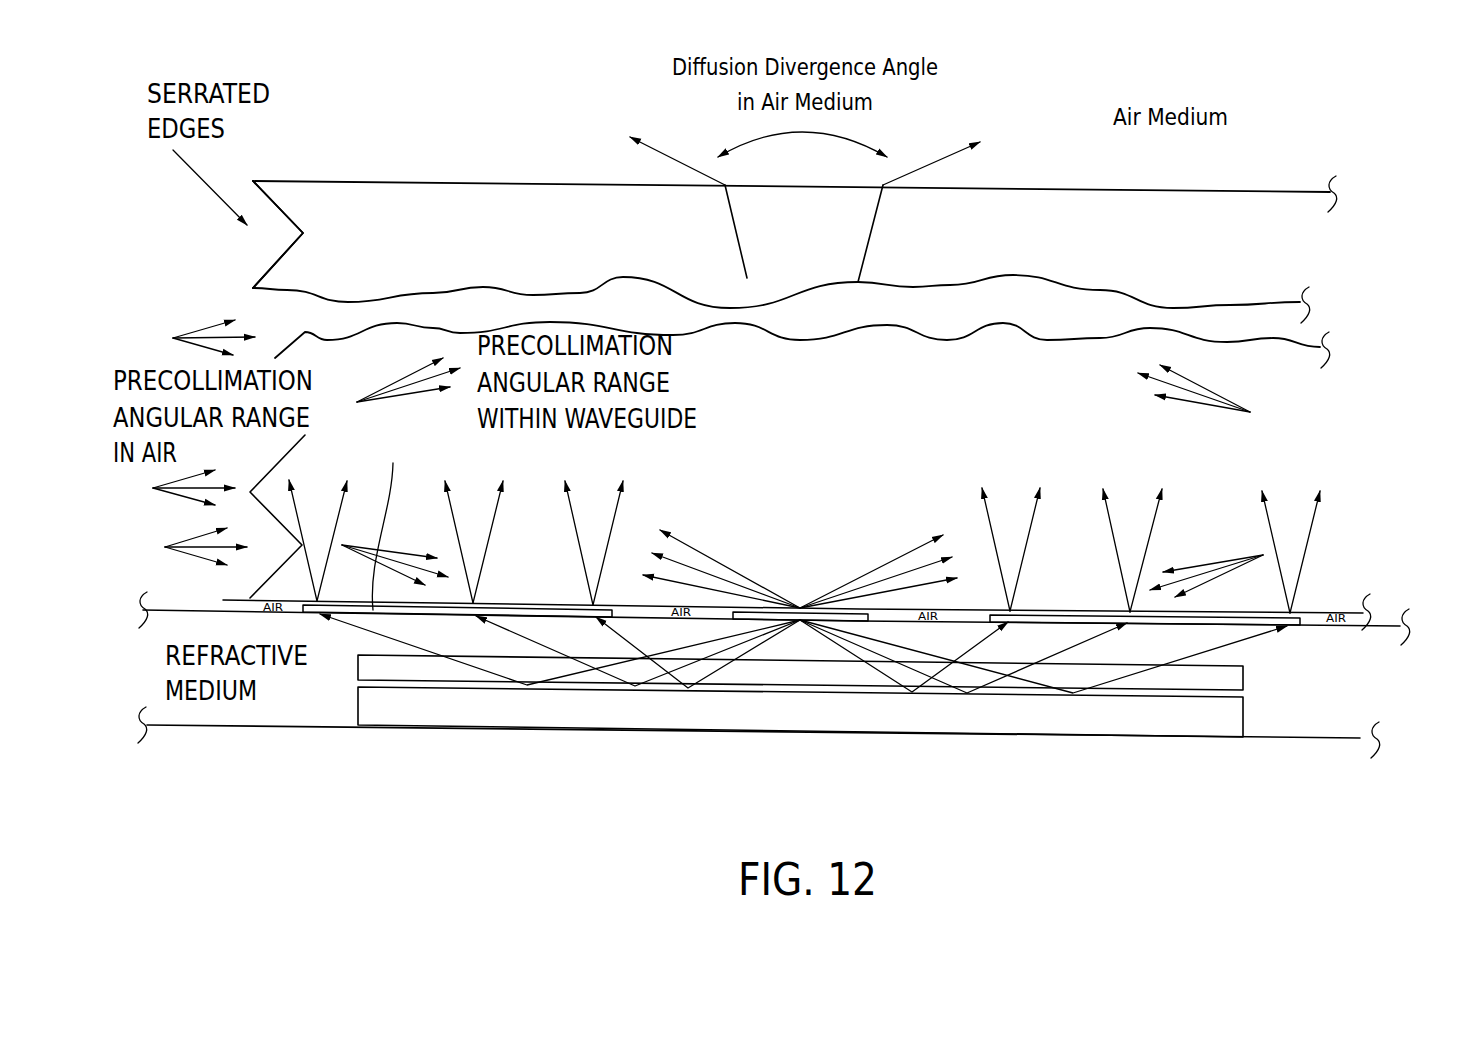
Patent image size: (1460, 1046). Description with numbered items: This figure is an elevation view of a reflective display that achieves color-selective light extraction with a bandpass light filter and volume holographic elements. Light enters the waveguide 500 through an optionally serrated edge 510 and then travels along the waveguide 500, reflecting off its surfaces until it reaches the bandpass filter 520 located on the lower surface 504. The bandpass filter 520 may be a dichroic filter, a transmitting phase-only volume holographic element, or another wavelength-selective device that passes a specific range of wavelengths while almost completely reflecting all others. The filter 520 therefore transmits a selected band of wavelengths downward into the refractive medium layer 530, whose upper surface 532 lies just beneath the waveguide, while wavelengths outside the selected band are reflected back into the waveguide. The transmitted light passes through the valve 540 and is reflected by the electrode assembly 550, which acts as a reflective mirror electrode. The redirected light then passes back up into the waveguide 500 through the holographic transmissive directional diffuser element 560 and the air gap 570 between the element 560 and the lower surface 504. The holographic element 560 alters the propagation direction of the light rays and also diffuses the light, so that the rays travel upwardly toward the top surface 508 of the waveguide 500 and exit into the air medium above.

The waveguide 500 is at (1298, 242).
The lower surface 504 is at (1340, 613).
The top surface 508 is at (1233, 192).
The serrated edge 510 is at (267, 270).
The bandpass filter 520 is at (802, 607).
The refractive medium layer 530 is at (155, 710).
The upper surface 532 is at (183, 610).
The valve 540 is at (1198, 683).
The electrode assembly 550 is at (1082, 723).
The holographic transmissive directional diffuser element 560 is at (1060, 612).
The air gap 570 is at (1365, 612).